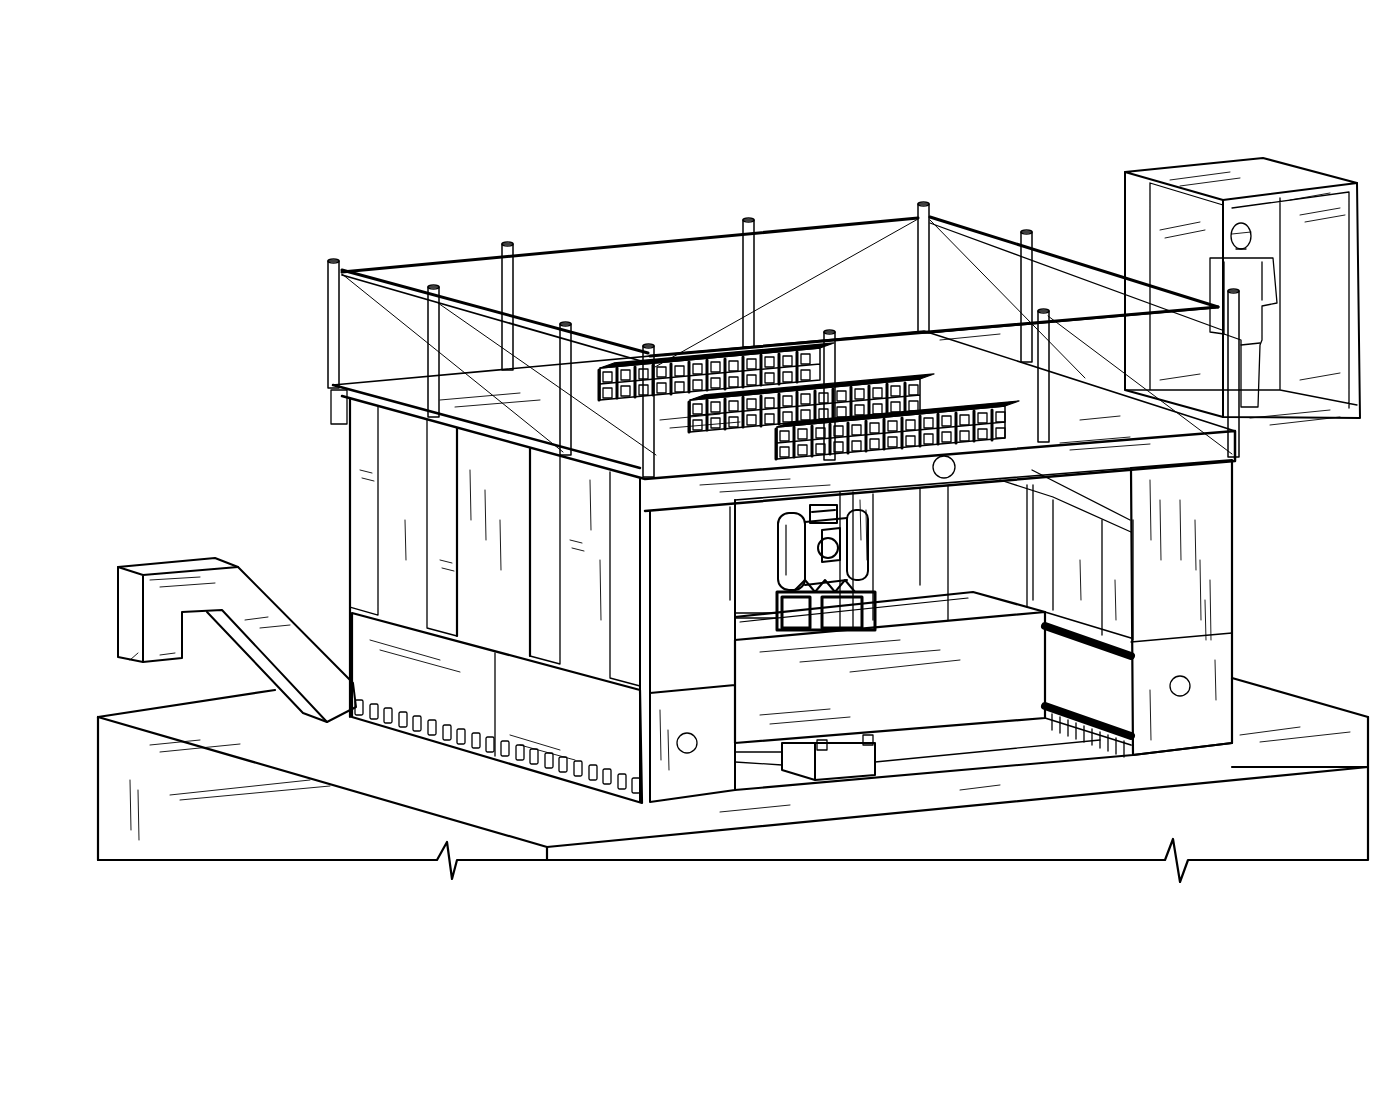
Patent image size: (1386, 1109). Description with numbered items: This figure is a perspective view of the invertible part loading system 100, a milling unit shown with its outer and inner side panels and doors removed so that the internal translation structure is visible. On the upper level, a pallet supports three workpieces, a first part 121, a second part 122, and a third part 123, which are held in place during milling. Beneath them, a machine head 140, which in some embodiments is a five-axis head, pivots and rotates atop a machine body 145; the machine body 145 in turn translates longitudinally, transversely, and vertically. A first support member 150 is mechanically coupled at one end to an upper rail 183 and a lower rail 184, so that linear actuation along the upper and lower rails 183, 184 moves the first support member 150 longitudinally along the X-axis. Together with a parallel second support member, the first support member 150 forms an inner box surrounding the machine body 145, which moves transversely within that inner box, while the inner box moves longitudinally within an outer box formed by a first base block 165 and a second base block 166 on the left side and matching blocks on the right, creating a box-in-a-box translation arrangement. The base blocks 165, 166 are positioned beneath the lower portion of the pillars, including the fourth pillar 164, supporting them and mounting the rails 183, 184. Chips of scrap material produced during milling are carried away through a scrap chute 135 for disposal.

The invertible part loading system 100 is at (341, 114).
The first part 121 is at (1012, 411).
The second part 122 is at (918, 385).
The third part 123 is at (788, 340).
The scrap chute 135 is at (190, 595).
The machine head 140 is at (800, 562).
The machine body 145 is at (839, 765).
The first support member 150 is at (930, 710).
The fourth pillar 164 is at (363, 498).
The first base block 165 is at (675, 792).
The second base block 166 is at (437, 690).
The upper rail 183 is at (1145, 660).
The lower rail 184 is at (1050, 735).